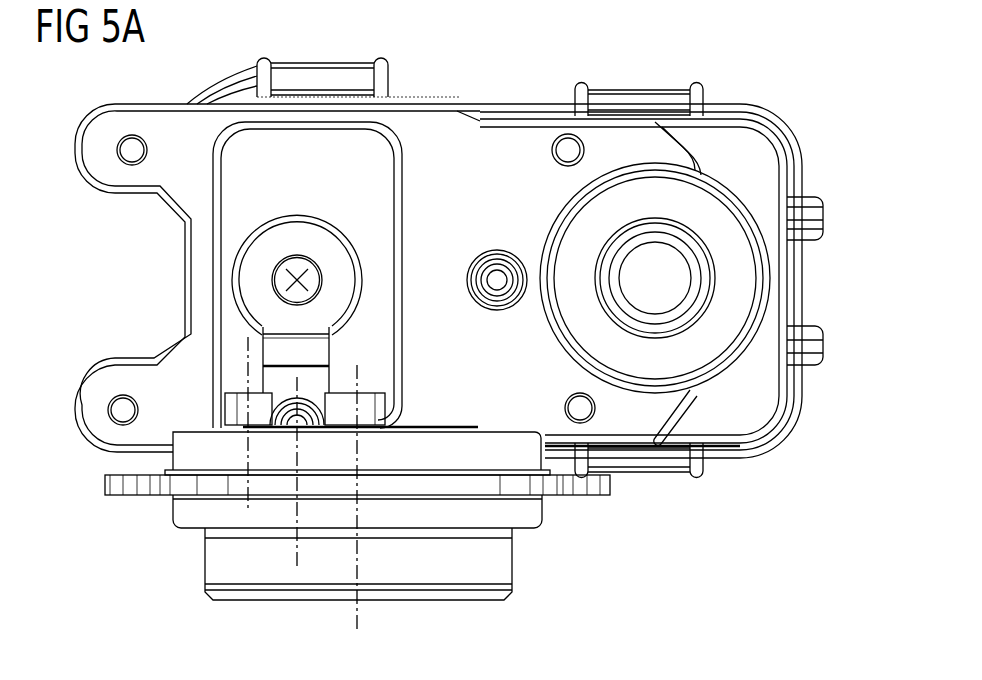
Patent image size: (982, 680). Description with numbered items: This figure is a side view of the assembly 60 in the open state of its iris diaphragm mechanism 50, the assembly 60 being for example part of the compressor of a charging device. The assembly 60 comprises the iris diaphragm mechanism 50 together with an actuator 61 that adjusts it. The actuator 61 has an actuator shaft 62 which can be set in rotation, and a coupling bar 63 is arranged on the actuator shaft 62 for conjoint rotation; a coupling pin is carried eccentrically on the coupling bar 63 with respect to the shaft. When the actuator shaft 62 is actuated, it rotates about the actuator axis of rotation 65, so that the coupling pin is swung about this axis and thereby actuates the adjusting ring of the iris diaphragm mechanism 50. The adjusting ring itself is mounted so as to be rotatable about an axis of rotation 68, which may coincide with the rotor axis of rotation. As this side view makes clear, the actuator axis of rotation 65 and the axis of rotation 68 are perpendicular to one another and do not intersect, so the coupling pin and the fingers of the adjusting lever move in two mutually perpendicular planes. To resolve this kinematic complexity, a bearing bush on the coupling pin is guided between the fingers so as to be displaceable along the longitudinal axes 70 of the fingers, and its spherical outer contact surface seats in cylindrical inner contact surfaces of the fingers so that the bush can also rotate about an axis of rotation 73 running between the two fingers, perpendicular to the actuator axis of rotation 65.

The iris diaphragm mechanism 50 is at (533, 578).
The assembly 60 is at (798, 92).
The actuator 61 is at (755, 368).
The actuator shaft 62 is at (253, 224).
The coupling bar 63 is at (317, 352).
The actuator axis of rotation 65 is at (297, 281).
The axis of rotation 68 is at (357, 626).
The longitudinal axes of the fingers 70 is at (248, 343).
The axis of rotation 73 is at (297, 562).